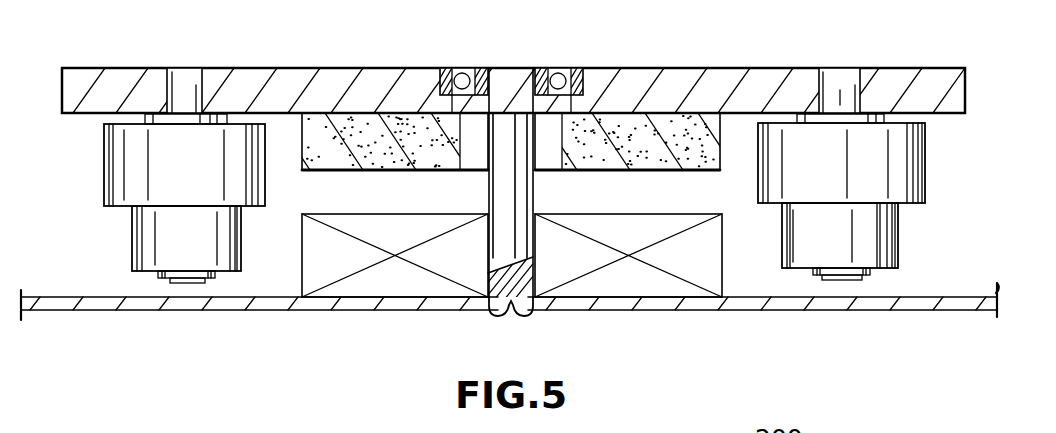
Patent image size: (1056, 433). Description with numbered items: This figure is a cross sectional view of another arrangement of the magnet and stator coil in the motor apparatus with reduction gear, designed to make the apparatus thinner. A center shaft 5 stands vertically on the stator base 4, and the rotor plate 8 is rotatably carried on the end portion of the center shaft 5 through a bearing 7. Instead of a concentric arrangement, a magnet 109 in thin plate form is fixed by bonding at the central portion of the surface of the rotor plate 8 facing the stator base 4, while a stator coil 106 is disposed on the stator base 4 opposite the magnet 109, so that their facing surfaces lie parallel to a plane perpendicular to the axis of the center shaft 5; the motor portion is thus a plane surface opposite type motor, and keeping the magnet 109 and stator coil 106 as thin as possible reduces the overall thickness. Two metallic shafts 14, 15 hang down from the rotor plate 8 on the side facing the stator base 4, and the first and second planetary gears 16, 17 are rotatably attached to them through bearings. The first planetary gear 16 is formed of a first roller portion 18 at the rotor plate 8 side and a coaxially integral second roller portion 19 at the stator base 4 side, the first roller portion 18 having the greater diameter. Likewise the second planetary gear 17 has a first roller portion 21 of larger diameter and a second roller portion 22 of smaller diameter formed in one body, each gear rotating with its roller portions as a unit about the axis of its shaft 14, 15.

The stator base 4 is at (263, 305).
The center shaft 5 is at (512, 318).
The bearing 7 is at (462, 70).
The rotor plate 8 is at (621, 75).
The shaft 14 is at (836, 76).
The shaft 15 is at (181, 77).
The first planetary gear 16 is at (886, 162).
The second planetary gear 17 is at (126, 123).
The first roller portion 18 is at (912, 148).
The second roller portion 19 is at (898, 238).
The first roller portion 21 is at (104, 160).
The second roller portion 22 is at (132, 237).
The stator coil 106 is at (647, 283).
The magnet 109 is at (683, 120).